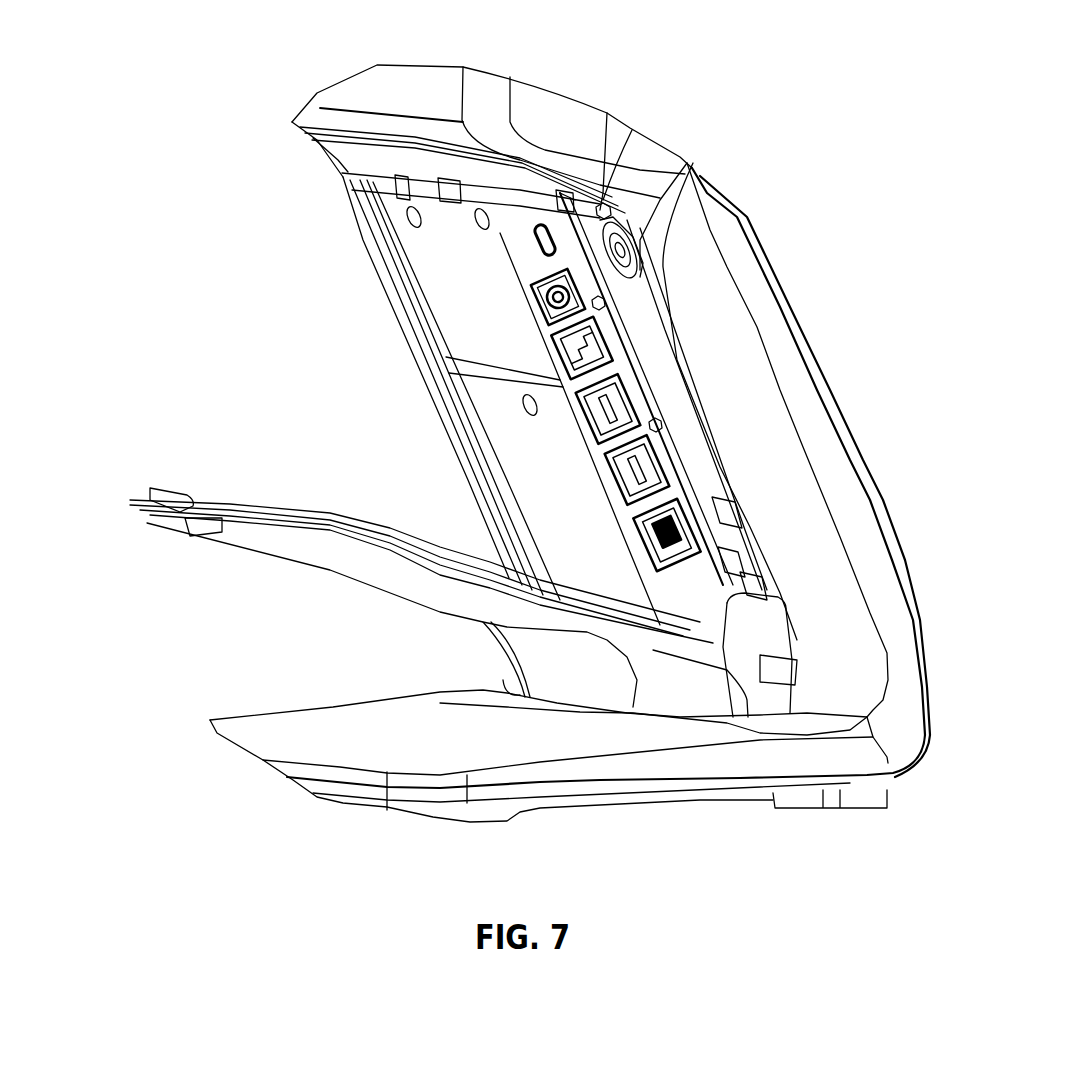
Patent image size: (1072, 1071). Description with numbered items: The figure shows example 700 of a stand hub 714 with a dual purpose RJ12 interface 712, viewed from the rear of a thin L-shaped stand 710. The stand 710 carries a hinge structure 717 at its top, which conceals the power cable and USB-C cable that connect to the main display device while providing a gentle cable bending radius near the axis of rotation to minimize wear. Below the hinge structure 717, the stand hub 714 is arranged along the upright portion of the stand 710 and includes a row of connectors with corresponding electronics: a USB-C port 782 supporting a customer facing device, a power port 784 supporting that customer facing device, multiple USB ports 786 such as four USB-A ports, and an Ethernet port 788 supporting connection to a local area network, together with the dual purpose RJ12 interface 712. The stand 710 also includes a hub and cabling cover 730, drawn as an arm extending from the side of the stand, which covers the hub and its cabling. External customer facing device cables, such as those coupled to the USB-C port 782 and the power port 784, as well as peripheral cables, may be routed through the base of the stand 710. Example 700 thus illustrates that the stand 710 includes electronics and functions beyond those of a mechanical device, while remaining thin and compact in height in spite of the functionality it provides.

The example 700 is at (966, 70).
The hinge structure 717 is at (370, 121).
The stand 710 is at (858, 528).
The stand hub 714 is at (492, 404).
The dual purpose RJ12 interface 712 is at (603, 336).
The USB-C port 782 is at (606, 210).
The power port 784 is at (643, 259).
The USB ports 786 is at (643, 387).
The Ethernet port 788 is at (705, 507).
The hub and cabling cover 730 is at (283, 542).